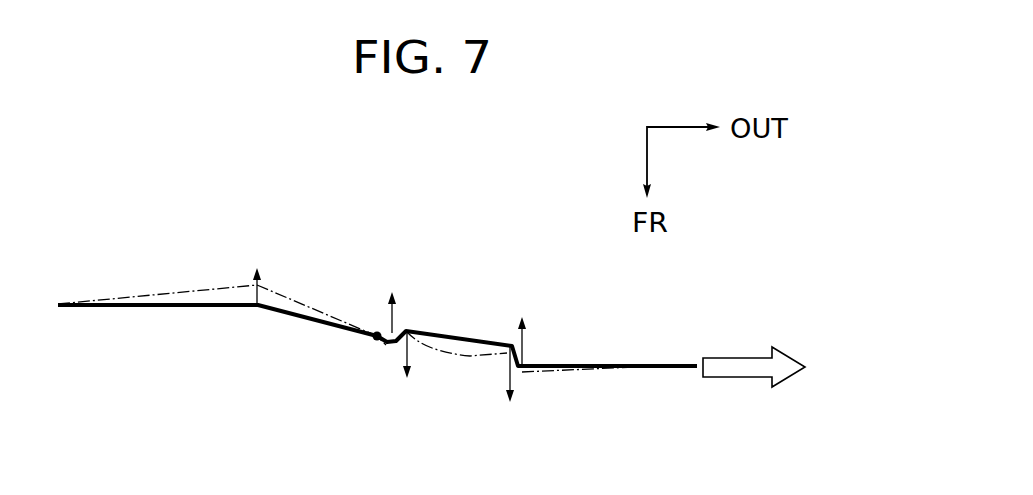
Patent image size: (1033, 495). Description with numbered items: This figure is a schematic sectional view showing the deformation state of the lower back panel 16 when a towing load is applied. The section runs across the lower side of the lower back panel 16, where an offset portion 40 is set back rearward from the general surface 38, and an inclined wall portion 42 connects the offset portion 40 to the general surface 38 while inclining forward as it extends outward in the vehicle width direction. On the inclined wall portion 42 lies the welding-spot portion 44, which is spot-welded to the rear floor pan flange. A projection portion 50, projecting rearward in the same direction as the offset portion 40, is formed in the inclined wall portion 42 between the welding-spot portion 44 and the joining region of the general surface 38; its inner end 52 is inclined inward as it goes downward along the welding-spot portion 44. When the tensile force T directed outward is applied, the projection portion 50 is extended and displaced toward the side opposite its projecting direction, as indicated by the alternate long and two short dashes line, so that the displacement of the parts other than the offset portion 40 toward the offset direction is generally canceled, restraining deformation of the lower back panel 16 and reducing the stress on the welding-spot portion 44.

The lower back panel 16 is at (597, 340).
The general surface 38 is at (678, 363).
The offset portion 40 is at (147, 310).
The inclined wall portion 42 is at (320, 322).
The welding-spot portion 44 is at (373, 340).
The projection portion 50 is at (460, 333).
The inner end 52 is at (407, 330).
The tensile force T is at (730, 362).